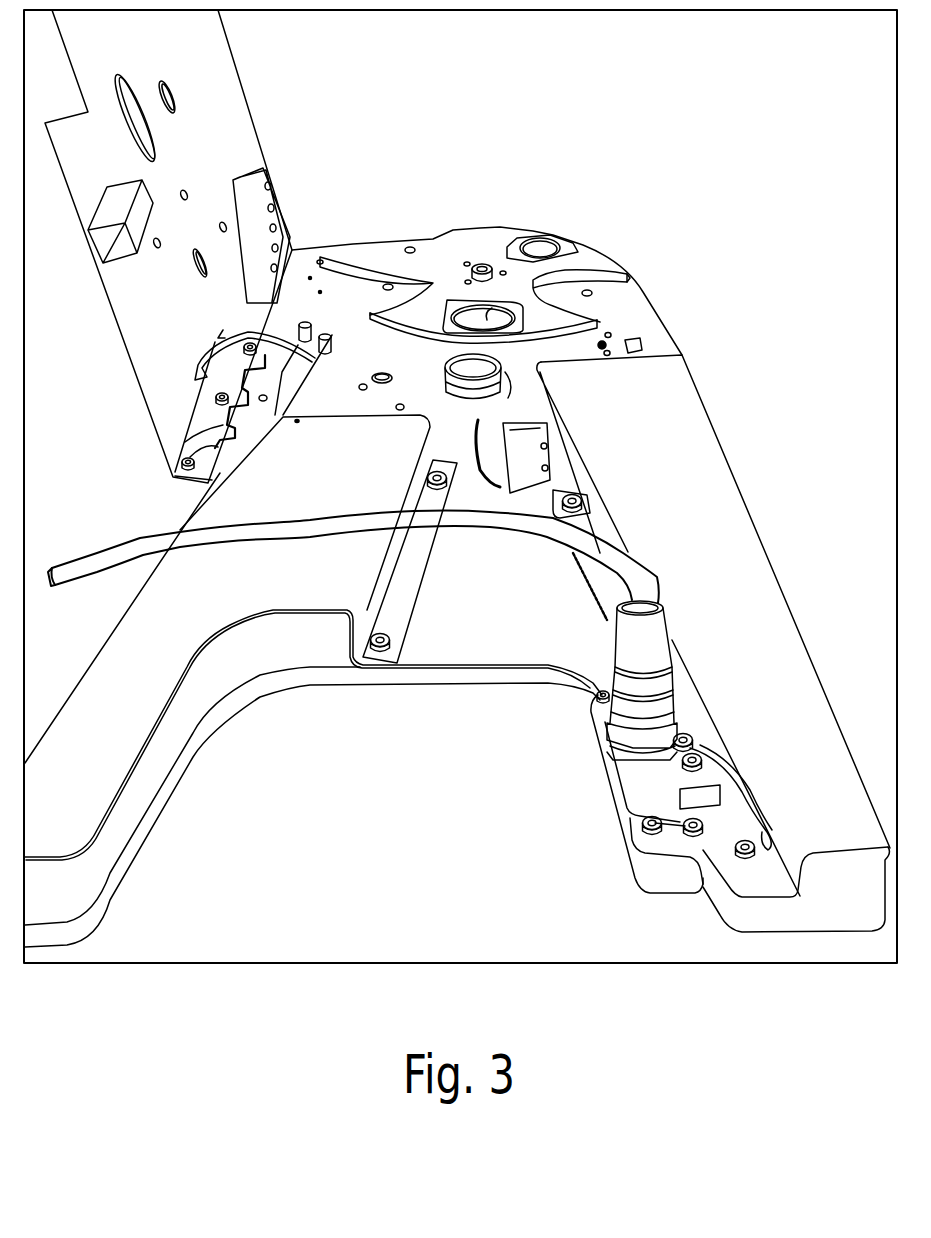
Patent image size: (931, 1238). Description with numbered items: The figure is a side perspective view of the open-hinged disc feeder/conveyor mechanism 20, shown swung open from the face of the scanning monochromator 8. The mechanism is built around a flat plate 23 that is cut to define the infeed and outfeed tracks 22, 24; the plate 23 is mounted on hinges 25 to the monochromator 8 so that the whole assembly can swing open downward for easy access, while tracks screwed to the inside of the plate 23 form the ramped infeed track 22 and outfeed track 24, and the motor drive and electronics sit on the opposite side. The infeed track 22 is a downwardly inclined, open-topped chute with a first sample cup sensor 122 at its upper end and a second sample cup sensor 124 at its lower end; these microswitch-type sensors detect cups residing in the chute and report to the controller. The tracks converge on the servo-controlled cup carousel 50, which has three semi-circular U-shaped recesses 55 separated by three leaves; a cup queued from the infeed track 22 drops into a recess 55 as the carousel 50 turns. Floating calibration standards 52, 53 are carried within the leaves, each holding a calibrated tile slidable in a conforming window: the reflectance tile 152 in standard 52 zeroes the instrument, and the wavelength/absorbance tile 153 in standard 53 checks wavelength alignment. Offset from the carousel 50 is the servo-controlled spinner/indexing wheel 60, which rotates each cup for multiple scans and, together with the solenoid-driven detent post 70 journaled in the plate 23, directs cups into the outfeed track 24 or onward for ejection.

The scanning monochromator 8 is at (214, 127).
The disc feeder/conveyor mechanism 20 is at (687, 192).
The infeed track 22 is at (723, 556).
The flat plate 23 is at (503, 614).
The outfeed track 24 is at (332, 491).
The hinges 25 is at (185, 447).
The cup carousel 50 is at (483, 264).
The floating calibration standard 52 is at (443, 333).
The floating calibration standard 53 is at (544, 247).
The U-shaped recess 55 is at (388, 284).
The spinner/indexing wheel 60 is at (540, 363).
The detent post 70 is at (378, 372).
The first sample cup sensor 122 is at (717, 747).
The second sample cup sensor 124 is at (535, 427).
The reflectance standard tile 152 is at (545, 300).
The wavelength/absorbance standard tile 153 is at (543, 238).